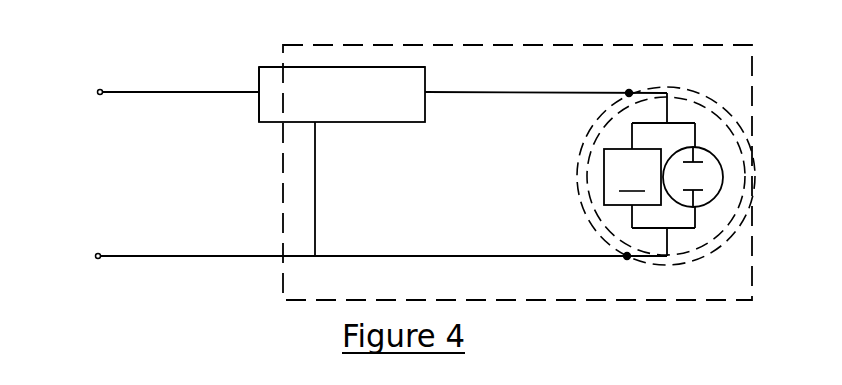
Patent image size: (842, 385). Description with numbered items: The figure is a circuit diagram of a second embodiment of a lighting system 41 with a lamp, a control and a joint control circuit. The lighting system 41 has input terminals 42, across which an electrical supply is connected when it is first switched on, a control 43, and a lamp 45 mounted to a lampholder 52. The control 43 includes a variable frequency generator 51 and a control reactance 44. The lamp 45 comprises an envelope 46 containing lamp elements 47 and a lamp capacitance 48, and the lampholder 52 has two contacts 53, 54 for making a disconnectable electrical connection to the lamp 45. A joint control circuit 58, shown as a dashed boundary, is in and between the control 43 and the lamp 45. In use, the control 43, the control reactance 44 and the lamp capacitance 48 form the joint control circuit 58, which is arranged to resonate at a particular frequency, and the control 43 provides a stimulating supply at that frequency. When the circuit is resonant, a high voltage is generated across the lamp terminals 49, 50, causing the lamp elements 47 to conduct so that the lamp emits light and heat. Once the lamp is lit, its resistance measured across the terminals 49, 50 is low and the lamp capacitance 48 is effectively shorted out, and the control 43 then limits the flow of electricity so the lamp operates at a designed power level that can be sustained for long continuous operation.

The lighting system 41 is at (226, 268).
The input terminals 42 is at (92, 245).
The control 43 is at (340, 62).
The control reactance 44 is at (348, 112).
The lamp 45 is at (711, 117).
The envelope 46 is at (710, 180).
The lamp elements 47 is at (722, 179).
The lamp capacitance 48 is at (632, 177).
The lamp terminal 49 is at (703, 136).
The lamp terminal 50 is at (703, 210).
The variable frequency generator 51 is at (276, 112).
The lampholder 52 is at (580, 203).
The contact 53 is at (628, 92).
The contact 54 is at (626, 259).
The joint control circuit 58 is at (282, 206).